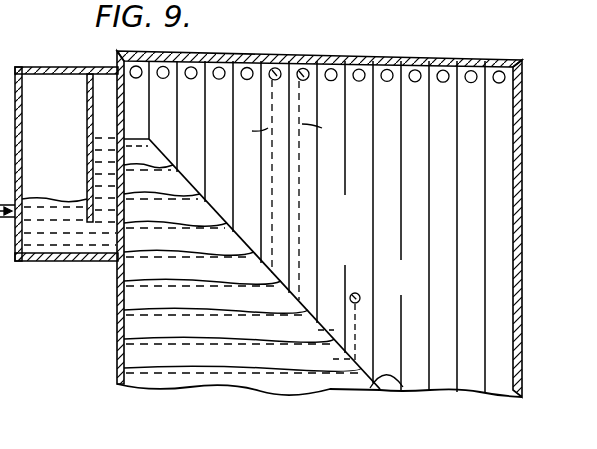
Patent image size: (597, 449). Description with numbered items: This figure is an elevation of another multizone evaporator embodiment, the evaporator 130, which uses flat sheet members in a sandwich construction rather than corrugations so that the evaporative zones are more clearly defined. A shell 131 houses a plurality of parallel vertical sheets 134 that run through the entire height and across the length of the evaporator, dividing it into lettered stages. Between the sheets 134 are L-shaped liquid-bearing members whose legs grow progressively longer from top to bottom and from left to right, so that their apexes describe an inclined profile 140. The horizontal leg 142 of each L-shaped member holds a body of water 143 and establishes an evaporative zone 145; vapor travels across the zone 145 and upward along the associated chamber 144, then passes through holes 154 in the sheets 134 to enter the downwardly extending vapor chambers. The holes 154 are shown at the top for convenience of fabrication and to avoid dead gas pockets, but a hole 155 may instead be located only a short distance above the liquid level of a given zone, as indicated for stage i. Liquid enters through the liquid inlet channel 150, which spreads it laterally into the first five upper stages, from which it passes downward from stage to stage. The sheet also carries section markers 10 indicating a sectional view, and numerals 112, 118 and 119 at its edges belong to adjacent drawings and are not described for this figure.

The section line 10- 10 is at (368, 34).
The adjacent figure element 112 is at (583, 405).
The adjacent figure element 118 is at (461, 12).
The adjacent figure element 119 is at (410, 12).
The evaporator 130 is at (312, 234).
The shell 131 is at (513, 254).
The parallel vertical sheets 134 is at (513, 140).
The inclined profile 140 is at (408, 384).
The horizontal leg 142 is at (150, 352).
The body of water 143 is at (150, 341).
The chamber 144 is at (300, 240).
The evaporative zone 145 is at (133, 298).
The liquid inlet channel 150 is at (40, 263).
The holes 154 is at (477, 82).
The hole 155 is at (359, 294).